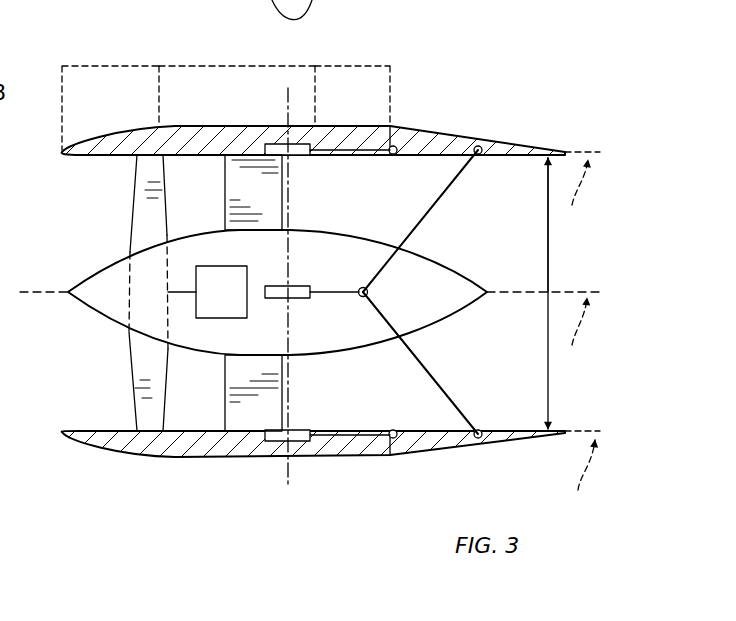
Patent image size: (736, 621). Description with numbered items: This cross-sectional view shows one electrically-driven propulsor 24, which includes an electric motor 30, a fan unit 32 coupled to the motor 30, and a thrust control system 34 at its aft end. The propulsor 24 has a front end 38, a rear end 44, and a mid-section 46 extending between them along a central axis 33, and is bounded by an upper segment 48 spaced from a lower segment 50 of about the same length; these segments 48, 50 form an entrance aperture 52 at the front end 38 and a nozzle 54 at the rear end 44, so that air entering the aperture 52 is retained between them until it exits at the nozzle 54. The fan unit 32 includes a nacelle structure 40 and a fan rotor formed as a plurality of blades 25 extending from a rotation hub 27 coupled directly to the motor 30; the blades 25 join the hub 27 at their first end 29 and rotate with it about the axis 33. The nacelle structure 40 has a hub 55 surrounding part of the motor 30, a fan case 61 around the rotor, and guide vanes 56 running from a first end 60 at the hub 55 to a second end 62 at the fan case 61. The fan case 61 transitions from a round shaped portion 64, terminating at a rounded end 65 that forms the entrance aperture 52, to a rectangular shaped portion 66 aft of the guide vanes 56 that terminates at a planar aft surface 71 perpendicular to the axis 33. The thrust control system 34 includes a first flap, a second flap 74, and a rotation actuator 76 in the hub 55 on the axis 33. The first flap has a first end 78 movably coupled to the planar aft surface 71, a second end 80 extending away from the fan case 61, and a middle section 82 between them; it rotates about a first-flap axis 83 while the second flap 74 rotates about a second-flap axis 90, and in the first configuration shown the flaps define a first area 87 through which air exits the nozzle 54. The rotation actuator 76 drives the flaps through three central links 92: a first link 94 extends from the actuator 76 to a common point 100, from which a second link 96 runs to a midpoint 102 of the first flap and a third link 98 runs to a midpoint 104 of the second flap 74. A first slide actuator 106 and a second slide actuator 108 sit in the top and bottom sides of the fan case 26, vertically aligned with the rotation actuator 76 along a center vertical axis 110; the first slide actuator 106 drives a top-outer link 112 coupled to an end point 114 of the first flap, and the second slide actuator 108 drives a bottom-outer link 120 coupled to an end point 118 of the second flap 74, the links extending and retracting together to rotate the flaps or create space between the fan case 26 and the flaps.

The propulsor 24 is at (463, 80).
The blades 25 is at (133, 190).
The fan case 26 is at (92, 453).
The rotation hub 27 is at (100, 315).
The first end 29 is at (128, 252).
The electric motor 30 is at (210, 266).
The fan unit 32 is at (108, 172).
The central axis 33 is at (574, 336).
The thrust control system 34 is at (522, 126).
The front end 38 is at (100, 65).
The nacelle structure 40 is at (138, 458).
The rear end 44 is at (360, 65).
The mid-section 46 is at (222, 65).
The upper segment 48 is at (352, 125).
The lower segment 50 is at (372, 456).
The entrance aperture 52 is at (82, 312).
The nozzle 54 is at (548, 344).
The hub 55 is at (190, 355).
The guide vanes 56 is at (224, 186).
The first end 60 is at (286, 228).
The fan case 61 is at (248, 461).
The second end 62 is at (265, 156).
The round shaped portion 64 is at (100, 135).
The rounded end 65 is at (62, 152).
The rectangular shaped portion 66 is at (385, 143).
The planar aft surface 71 is at (393, 146).
The second flap 74 is at (521, 442).
The rotation actuator 76 is at (307, 287).
The first end 78 is at (395, 456).
The second end 80 is at (540, 440).
The middle section 82 is at (441, 449).
The first-flap axis 83 is at (568, 293).
The first area 87 is at (528, 288).
The second-flap axis 90 is at (582, 474).
The central links 92 is at (459, 189).
The first link 94 is at (350, 294).
The second link 96 is at (425, 218).
The third link 98 is at (456, 402).
The common point 100 is at (372, 295).
The midpoint 102 is at (479, 146).
The midpoint 104 is at (490, 443).
The first slide actuator 106 is at (298, 157).
The second slide actuator 108 is at (278, 443).
The center vertical axis 110 is at (292, 482).
The top-outer link 112 is at (358, 152).
The end point 114 is at (570, 152).
The end point 118 is at (576, 392).
The bottom-outer link 120 is at (355, 430).